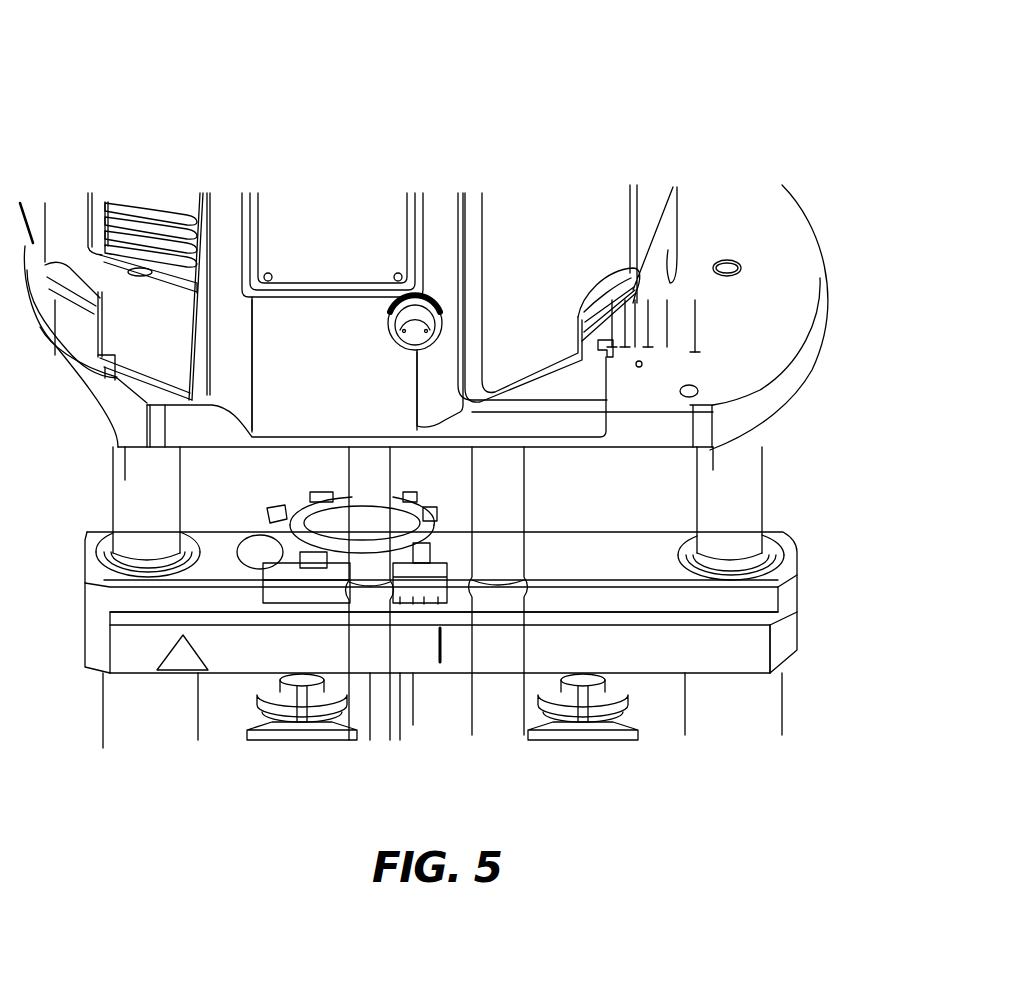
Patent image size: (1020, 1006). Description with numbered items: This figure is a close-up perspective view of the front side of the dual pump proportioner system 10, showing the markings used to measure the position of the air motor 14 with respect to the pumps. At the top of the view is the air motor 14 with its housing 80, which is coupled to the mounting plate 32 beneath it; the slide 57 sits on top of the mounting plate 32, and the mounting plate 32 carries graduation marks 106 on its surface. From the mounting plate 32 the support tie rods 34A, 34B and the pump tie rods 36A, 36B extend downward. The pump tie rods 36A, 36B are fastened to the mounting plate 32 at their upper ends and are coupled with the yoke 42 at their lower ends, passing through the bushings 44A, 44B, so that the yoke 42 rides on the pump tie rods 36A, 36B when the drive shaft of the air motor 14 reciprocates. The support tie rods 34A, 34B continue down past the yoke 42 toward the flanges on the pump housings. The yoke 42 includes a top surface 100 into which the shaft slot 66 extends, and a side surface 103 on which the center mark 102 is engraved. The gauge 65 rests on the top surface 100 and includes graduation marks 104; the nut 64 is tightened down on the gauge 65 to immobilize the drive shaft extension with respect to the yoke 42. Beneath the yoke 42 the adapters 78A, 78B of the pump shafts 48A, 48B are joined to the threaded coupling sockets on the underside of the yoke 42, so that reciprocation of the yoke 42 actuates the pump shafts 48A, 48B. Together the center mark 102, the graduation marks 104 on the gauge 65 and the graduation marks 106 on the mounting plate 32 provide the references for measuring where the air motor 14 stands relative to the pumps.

The dual pump proportioner system 10 is at (697, 99).
The air motor 14 is at (385, 196).
The mounting plate 32 is at (773, 382).
The support tie rod 34A is at (498, 707).
The support tie rod 34B is at (377, 717).
The pump tie rod 36A is at (738, 482).
The pump tie rod 36B is at (130, 483).
The yoke 42 is at (803, 662).
The bushing 44A is at (732, 710).
The bushing 44B is at (158, 723).
The pump shaft 48A is at (591, 752).
The pump shaft 48B is at (290, 761).
The slide 57 is at (588, 385).
The nut 64 is at (294, 508).
The gauge 65 is at (312, 588).
The shaft slot 66 is at (258, 550).
The adapter 78A is at (620, 683).
The adapter 78B is at (273, 685).
The housing 80 is at (342, 364).
The top surface 100 is at (640, 569).
The center mark 102 is at (447, 654).
The side surface 103 is at (710, 669).
The graduation marks 104 is at (431, 567).
The graduation marks 106 is at (716, 318).